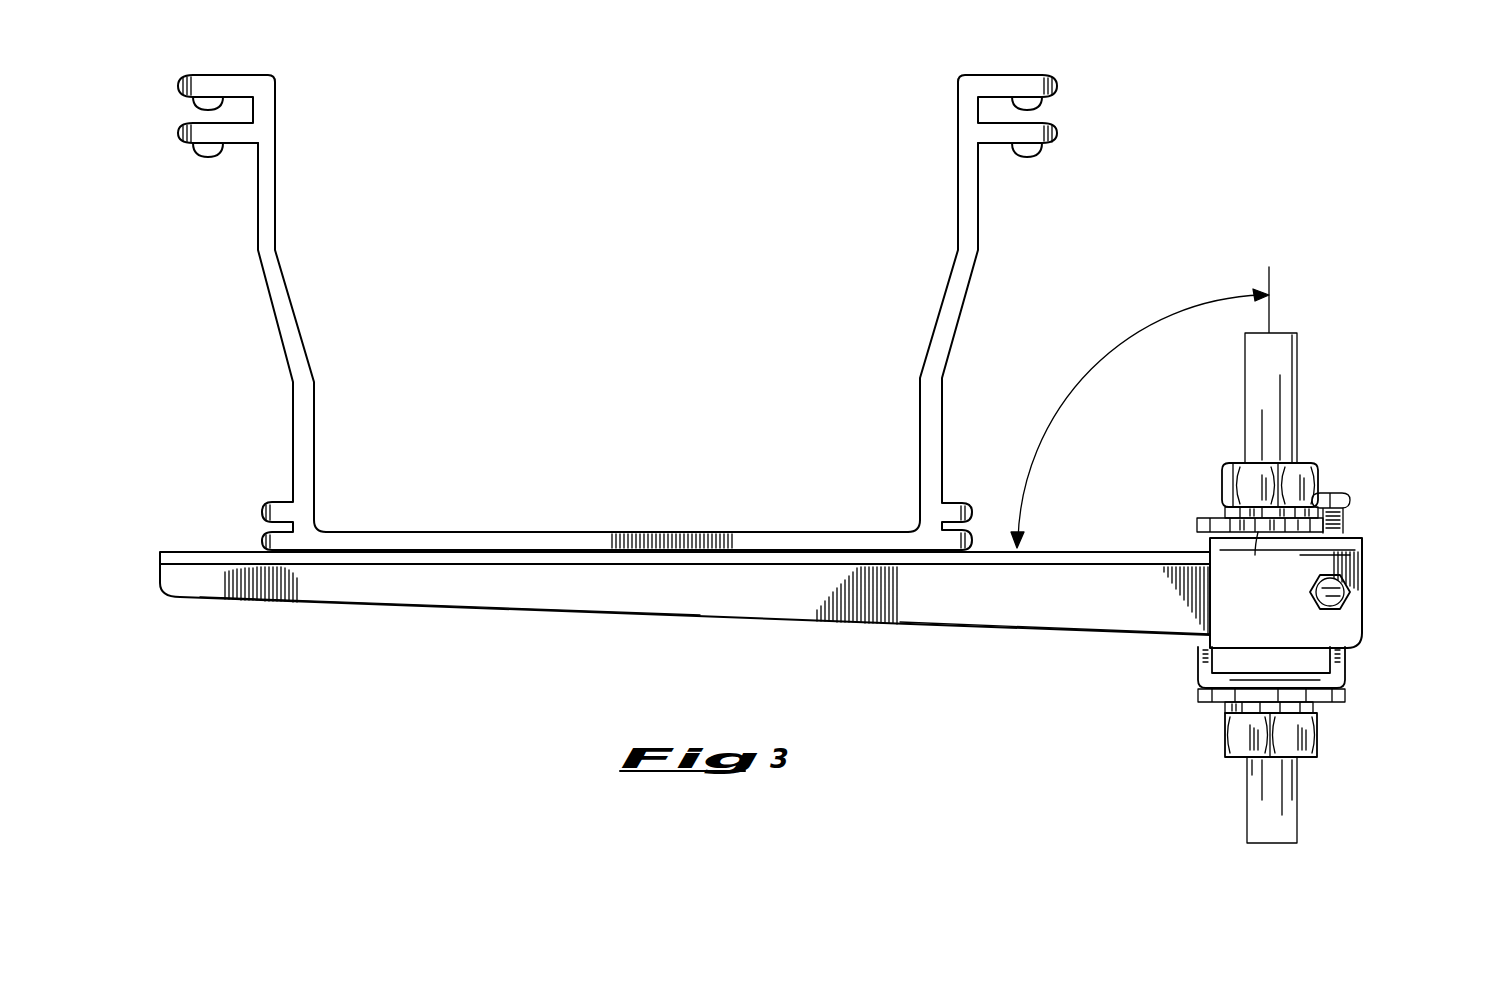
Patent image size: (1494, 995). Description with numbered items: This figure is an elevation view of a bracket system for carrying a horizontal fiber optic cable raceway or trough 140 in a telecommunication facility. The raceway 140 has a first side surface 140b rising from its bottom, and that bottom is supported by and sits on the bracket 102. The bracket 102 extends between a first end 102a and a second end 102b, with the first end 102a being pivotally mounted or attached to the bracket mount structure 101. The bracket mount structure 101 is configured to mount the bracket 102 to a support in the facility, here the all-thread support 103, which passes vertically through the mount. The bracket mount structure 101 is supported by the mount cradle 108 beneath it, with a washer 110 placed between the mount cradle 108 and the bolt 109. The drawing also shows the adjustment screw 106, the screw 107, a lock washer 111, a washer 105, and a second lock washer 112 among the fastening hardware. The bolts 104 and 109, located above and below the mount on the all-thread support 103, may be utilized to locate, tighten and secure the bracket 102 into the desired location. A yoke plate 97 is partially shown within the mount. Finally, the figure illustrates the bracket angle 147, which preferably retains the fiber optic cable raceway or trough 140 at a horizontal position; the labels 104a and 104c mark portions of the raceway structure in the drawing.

The yoke plate 97 is at (1250, 561).
The bracket mount structure 101 is at (1303, 635).
The bracket 102 is at (802, 604).
The first end 102a is at (1130, 605).
The second end 102b is at (388, 604).
The all-thread support 103 is at (1272, 357).
The bolt 104 is at (1322, 476).
The channel base 104a is at (462, 560).
The channel side wall 104c is at (920, 395).
The washer 105 is at (1197, 528).
The adjustment screw 106 is at (1352, 498).
The screw 107 is at (1350, 590).
The mount cradle 108 is at (1310, 660).
The bolt 109 is at (1318, 740).
The washer 110 is at (1208, 697).
The lock washer 111 is at (1225, 513).
The lock washer 112 is at (1222, 707).
The fiber optic cable raceway 140 is at (952, 202).
The first side surface 140b is at (282, 210).
The bracket angle 147 is at (1098, 362).